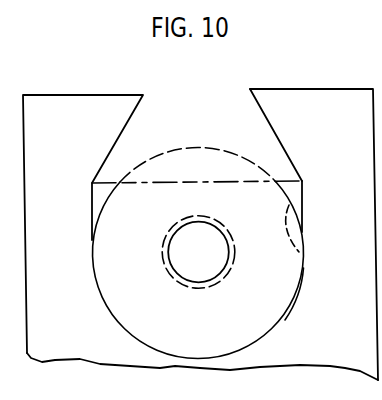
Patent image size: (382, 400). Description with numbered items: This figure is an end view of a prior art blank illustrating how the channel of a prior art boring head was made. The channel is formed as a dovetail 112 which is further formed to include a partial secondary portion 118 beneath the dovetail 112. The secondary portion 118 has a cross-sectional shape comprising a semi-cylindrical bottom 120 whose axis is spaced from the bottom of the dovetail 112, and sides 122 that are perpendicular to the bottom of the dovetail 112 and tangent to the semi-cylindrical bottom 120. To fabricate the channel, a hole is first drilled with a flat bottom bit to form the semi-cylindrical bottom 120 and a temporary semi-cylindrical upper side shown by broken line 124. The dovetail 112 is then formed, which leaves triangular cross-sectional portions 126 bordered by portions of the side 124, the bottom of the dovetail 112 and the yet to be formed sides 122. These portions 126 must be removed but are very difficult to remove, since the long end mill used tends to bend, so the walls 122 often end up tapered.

The dovetail 112 is at (199, 123).
The secondary portion 118 is at (300, 295).
The semi-cylindrical bottom 120 is at (273, 330).
The sides of secondary portion 122 is at (304, 199).
The broken line 124 is at (299, 252).
The triangular cross-sectional portions 126 is at (288, 188).